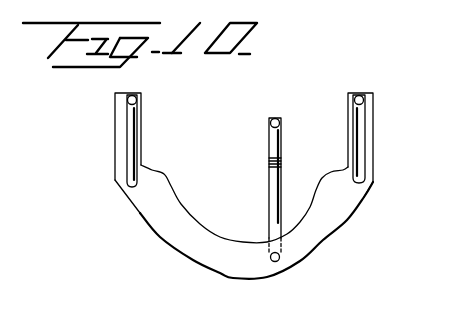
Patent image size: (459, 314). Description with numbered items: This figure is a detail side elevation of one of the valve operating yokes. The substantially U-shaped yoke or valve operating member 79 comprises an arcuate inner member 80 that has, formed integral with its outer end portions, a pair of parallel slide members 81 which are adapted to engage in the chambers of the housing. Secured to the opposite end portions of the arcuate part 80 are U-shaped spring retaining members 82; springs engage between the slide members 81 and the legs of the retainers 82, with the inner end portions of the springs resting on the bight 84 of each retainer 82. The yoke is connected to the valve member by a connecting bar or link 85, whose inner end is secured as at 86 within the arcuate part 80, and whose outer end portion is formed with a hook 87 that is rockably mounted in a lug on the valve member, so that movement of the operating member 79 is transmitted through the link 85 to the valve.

The valve operating member 79 is at (302, 260).
The arcuate inner member 80 is at (322, 229).
The slide members 81 is at (371, 150).
The spring retaining members 82 is at (127, 135).
The bight 84 is at (132, 190).
The connecting bar or link 85 is at (283, 182).
The securing point of connecting link 86 is at (265, 246).
The hook 87 is at (283, 140).